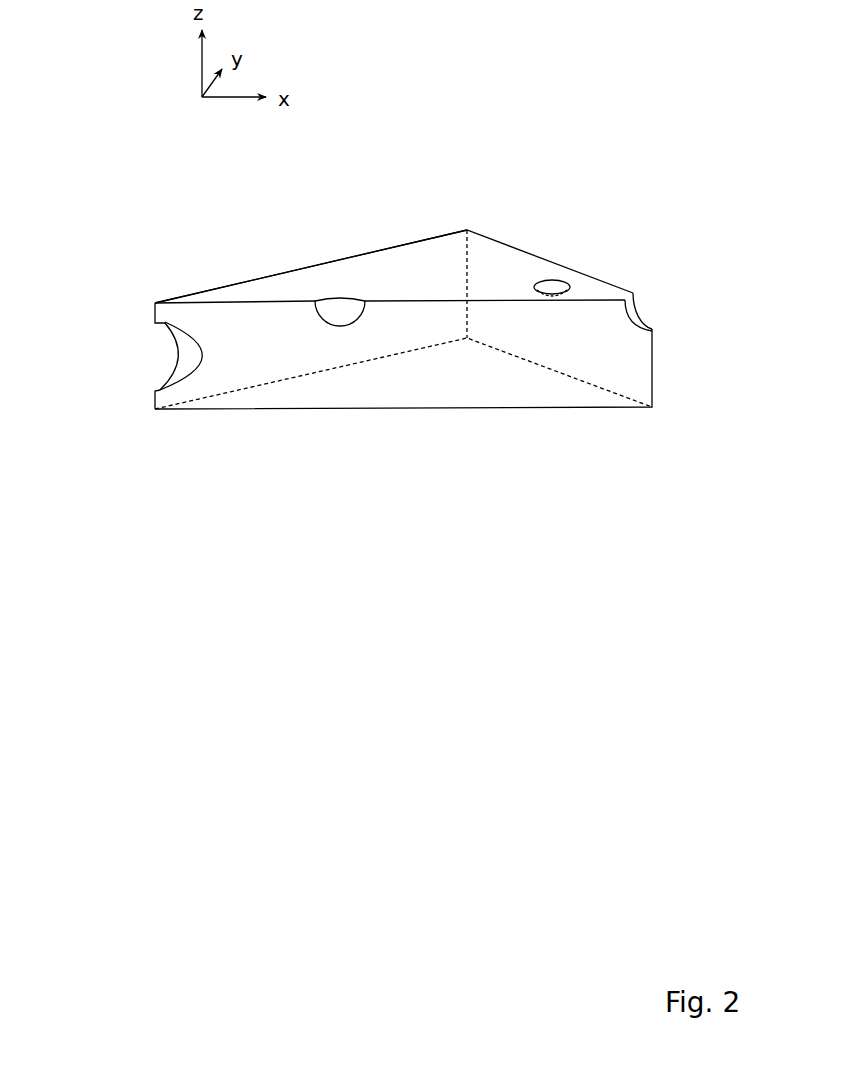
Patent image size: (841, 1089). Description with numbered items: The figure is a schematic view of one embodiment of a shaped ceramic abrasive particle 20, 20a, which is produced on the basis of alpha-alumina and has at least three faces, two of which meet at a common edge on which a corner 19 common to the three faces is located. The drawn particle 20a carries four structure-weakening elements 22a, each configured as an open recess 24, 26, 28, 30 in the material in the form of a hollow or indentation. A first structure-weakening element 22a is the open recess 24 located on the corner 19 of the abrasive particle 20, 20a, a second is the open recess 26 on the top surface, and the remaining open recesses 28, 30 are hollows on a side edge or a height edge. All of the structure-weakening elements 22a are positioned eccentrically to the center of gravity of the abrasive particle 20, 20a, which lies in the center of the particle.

The corner 19 is at (147, 292).
The shaped ceramic abrasive particle 20 is at (434, 232).
The ceramic shaped abrasive particle 20a is at (586, 132).
The structure-weakening element 22a is at (381, 282).
The open recess 24 is at (643, 296).
The open recess 26 is at (552, 279).
The open recess 28 is at (340, 297).
The open recess 30 is at (166, 354).